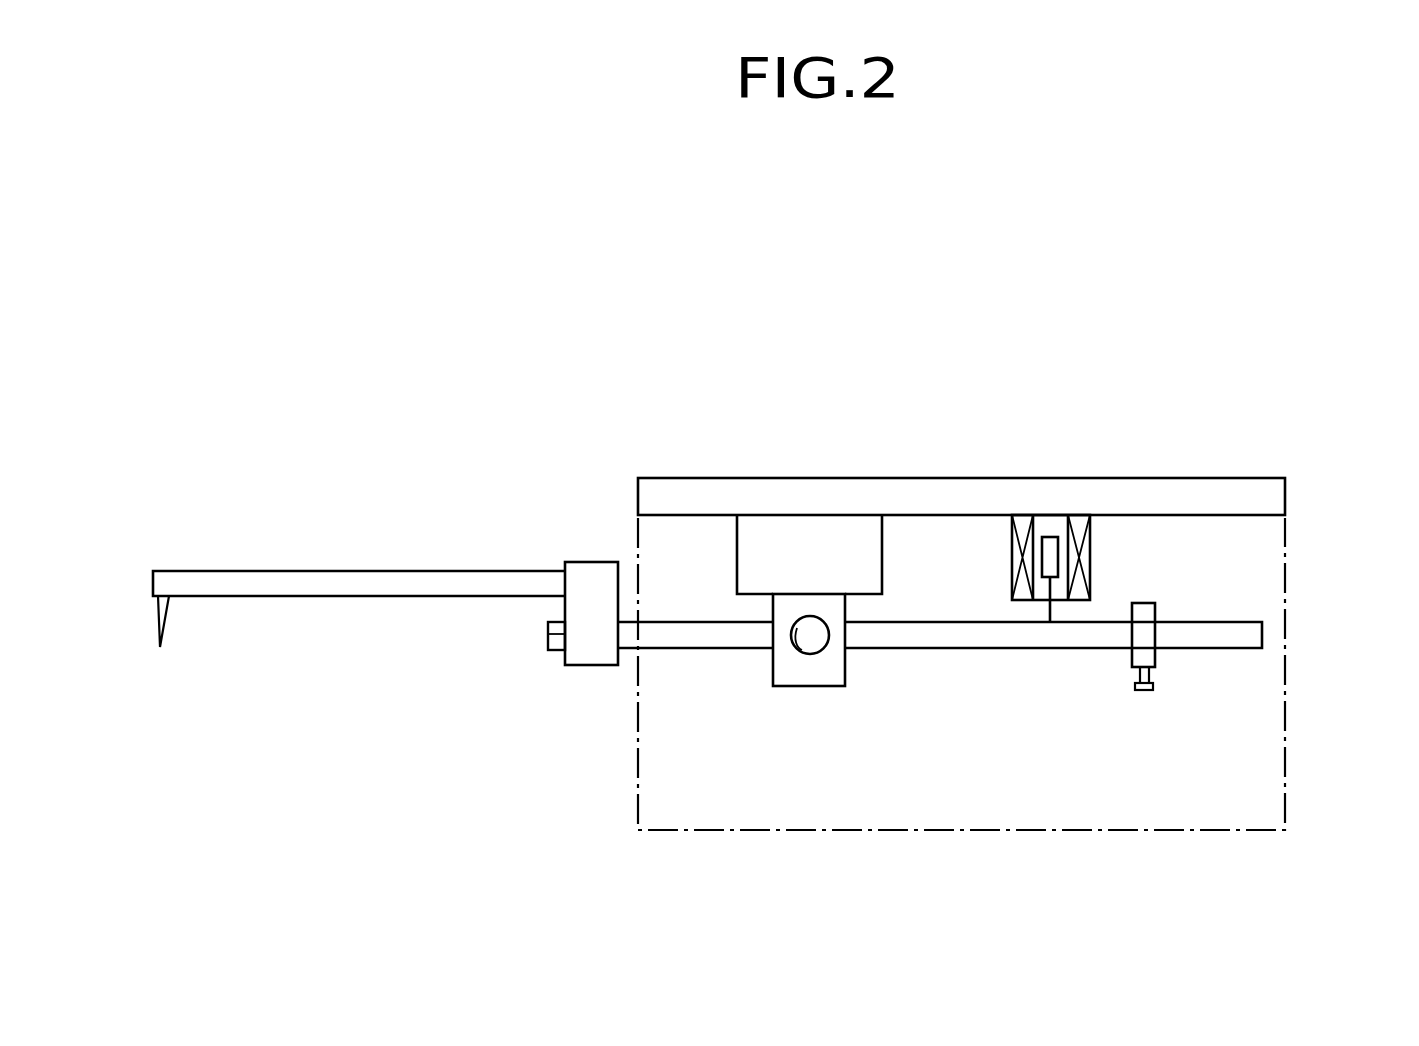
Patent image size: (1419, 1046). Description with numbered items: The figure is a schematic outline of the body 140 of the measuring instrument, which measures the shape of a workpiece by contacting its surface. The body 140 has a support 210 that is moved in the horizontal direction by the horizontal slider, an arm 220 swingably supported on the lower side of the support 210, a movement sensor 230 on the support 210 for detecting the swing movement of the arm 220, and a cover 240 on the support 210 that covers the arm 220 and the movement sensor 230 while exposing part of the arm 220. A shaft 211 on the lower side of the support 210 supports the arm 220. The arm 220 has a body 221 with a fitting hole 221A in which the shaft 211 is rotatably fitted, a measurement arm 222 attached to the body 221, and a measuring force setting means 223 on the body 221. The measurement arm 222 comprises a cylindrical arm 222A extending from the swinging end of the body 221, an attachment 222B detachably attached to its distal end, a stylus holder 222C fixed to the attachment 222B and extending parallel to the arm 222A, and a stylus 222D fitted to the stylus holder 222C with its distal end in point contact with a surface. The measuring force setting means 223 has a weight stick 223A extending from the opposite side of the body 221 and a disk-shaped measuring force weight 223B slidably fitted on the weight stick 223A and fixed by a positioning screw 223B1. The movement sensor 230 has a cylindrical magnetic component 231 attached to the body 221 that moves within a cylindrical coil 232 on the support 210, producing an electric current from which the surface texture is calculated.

The body 140 is at (1300, 372).
The support 210 is at (899, 487).
The shaft 211 is at (813, 657).
The arm 220 is at (700, 650).
The body 221 is at (847, 667).
The fitting hole 221A is at (797, 650).
The measurement arm 222 is at (400, 578).
The arm 222A is at (663, 628).
The attachment 222B is at (595, 658).
The stylus holder 222C is at (465, 585).
The stylus 222D is at (155, 620).
The measuring force setting means 223 is at (943, 650).
The weight stick 223A is at (1033, 650).
The measuring force weight 223B is at (1157, 656).
The positioning screw 223B1 is at (1146, 691).
The movement sensor 230 is at (1062, 512).
The magnetic component 231 is at (1043, 535).
The coil 232 is at (1090, 542).
The cover 240 is at (1285, 757).